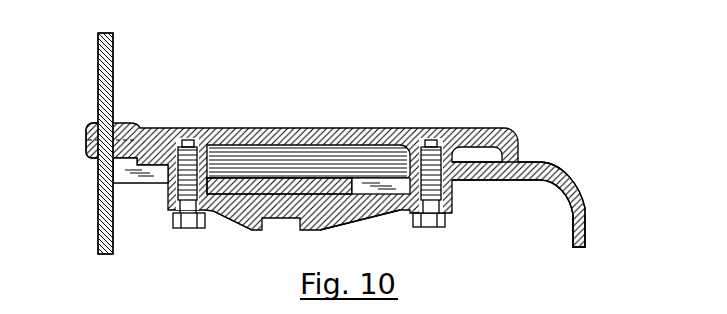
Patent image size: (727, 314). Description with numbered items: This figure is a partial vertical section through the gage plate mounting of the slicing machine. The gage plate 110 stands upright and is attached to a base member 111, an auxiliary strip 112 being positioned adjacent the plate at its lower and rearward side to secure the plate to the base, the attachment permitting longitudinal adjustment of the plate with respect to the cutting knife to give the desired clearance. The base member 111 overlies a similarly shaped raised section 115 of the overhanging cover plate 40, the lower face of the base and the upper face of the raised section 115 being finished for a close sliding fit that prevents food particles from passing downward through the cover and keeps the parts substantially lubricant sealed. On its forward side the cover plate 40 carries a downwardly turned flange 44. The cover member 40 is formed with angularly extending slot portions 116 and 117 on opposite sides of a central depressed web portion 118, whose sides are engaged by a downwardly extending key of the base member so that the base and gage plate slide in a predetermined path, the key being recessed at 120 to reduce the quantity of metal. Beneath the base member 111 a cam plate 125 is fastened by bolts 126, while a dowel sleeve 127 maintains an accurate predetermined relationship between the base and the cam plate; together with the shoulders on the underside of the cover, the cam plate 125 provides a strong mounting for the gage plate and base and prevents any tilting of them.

The gage plate 110 is at (113, 68).
The auxiliary strip 112 is at (90, 122).
The base member 111 is at (381, 126).
The recess 120 is at (228, 152).
The cover plate 40 is at (483, 158).
The raised section 115 is at (522, 163).
The downwardly turned flange 44 is at (587, 233).
The slot portion 116 is at (128, 183).
The central depressed web portion 118 is at (248, 188).
The slot portion 117 is at (392, 220).
The cam plate 125 is at (355, 222).
The bolts 126 is at (447, 226).
The dowel sleeve 127 is at (446, 193).